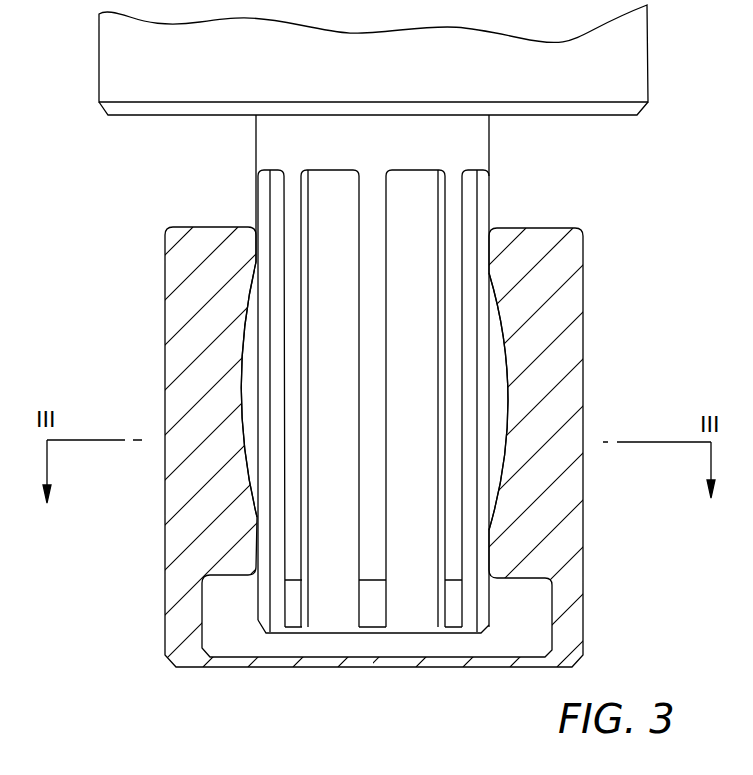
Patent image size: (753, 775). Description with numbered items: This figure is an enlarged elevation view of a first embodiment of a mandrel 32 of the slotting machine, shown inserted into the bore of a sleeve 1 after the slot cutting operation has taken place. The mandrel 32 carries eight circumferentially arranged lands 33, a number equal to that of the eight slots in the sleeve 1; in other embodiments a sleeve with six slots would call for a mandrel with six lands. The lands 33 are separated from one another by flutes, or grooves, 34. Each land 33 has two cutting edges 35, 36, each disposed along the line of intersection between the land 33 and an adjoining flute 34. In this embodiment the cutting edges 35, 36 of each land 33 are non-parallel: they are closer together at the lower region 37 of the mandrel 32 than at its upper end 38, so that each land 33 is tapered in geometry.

The sleeve 1 is at (568, 392).
The mandrel 32 is at (500, 196).
The land 33 is at (290, 217).
The flute 34 is at (312, 185).
The cutting edge 35 is at (358, 310).
The cutting edge 36 is at (387, 348).
The lower region 37 is at (356, 588).
The upper end 38 is at (385, 160).